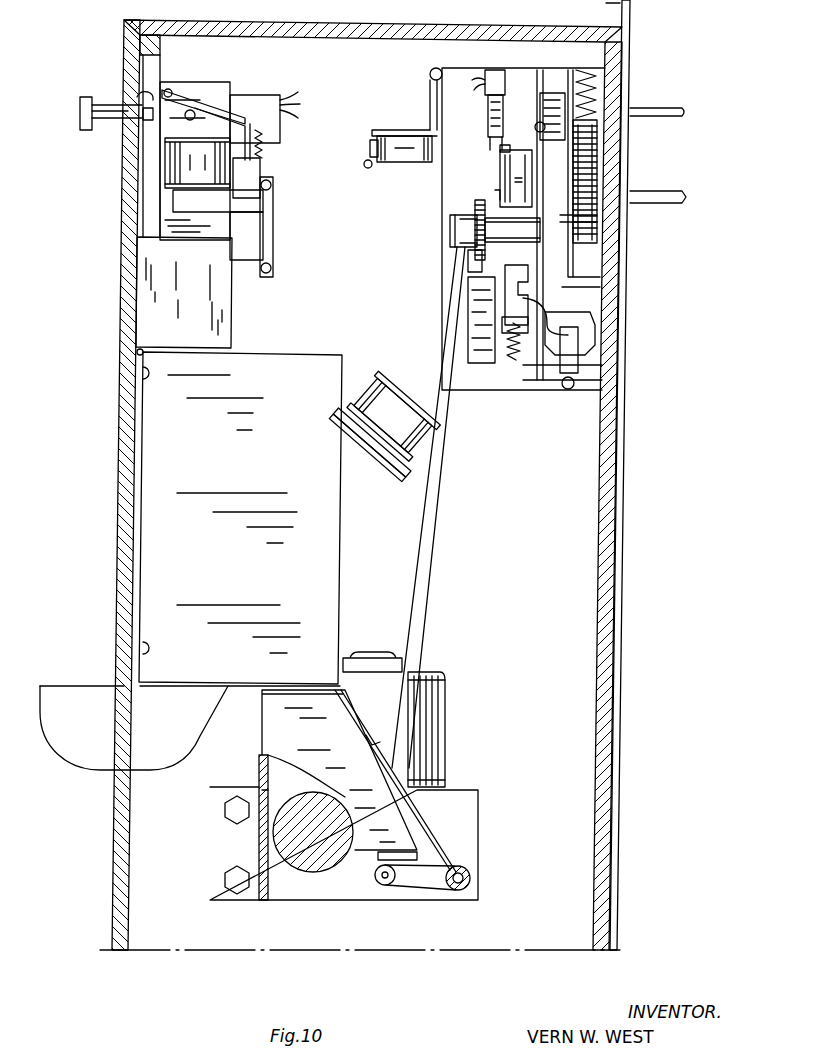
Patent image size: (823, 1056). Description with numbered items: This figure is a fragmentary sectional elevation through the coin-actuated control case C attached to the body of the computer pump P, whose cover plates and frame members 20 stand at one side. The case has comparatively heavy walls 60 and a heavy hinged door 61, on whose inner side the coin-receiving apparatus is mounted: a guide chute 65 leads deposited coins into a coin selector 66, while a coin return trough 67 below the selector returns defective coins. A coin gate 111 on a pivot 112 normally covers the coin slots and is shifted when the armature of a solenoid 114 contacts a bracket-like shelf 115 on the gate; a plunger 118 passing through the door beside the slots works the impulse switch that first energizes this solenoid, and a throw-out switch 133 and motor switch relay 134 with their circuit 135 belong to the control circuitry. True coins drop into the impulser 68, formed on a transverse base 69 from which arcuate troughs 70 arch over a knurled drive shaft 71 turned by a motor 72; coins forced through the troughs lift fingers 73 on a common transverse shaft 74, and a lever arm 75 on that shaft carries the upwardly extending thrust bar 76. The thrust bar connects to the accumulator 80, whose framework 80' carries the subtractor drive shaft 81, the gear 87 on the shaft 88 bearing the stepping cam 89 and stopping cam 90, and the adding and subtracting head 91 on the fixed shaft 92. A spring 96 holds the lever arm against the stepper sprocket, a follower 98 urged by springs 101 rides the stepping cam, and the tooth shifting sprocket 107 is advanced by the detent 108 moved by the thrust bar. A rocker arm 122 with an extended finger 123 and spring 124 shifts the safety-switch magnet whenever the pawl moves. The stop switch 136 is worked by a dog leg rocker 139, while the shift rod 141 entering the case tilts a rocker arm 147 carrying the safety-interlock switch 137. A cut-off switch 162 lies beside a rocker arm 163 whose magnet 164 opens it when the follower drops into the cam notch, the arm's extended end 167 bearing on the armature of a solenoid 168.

The cover plates and frame members 20 is at (628, 12).
The walls 60 is at (612, 545).
The door 61 is at (120, 820).
The guide chute 65 is at (184, 296).
The coin selector 66 is at (240, 518).
The coin return trough 67 is at (66, 745).
The impulser 68 is at (490, 838).
The base 69 is at (265, 900).
The trough 70 is at (339, 775).
The knurled drive shaft 71 is at (320, 858).
The motor 72 is at (435, 760).
The finger 73 is at (426, 822).
The transverse shaft 74 is at (472, 877).
The lever arm 75 is at (432, 895).
The thrust bar 76 is at (436, 570).
The accumulator 80 is at (488, 229).
The framework 80' is at (481, 399).
The subtractor drive shaft 81 is at (672, 192).
The gear 87 is at (592, 140).
The shaft 88 is at (576, 218).
The stepping cam 89 is at (580, 168).
The stopping cam 90 is at (522, 172).
The adding and subtracting head 91 is at (508, 230).
The fixed shaft 92 is at (450, 230).
The spring 96 is at (596, 76).
The follower 98 is at (545, 112).
The springs 101 is at (535, 127).
The tooth shifting sprocket 107 is at (482, 200).
The detent 108 is at (472, 260).
The coin gate 111 is at (146, 185).
The pivot 112 is at (148, 96).
The solenoid 114 is at (212, 168).
The bracket-like shelf 115 is at (150, 128).
The plunger 118 is at (80, 108).
The rocker arm 122 is at (556, 385).
The finger 123 is at (480, 300).
The spring 124 is at (510, 350).
The throw-out switch 133 is at (278, 98).
The motor switch relay 134 is at (272, 230).
The circuit 135 is at (366, 168).
The stop switch 136 is at (500, 68).
The safety-interlock switch 137 is at (382, 148).
The rocker 139 is at (500, 150).
The shift rod 141 is at (652, 108).
The rocker arm 147 is at (400, 128).
The cut-off switch 162 is at (505, 326).
The rocker arm 163 is at (530, 302).
The magnet 164 is at (560, 318).
The extended end 167 is at (582, 340).
The solenoid 168 is at (590, 355).
The case C is at (111, 409).
The computer pump P is at (637, 630).